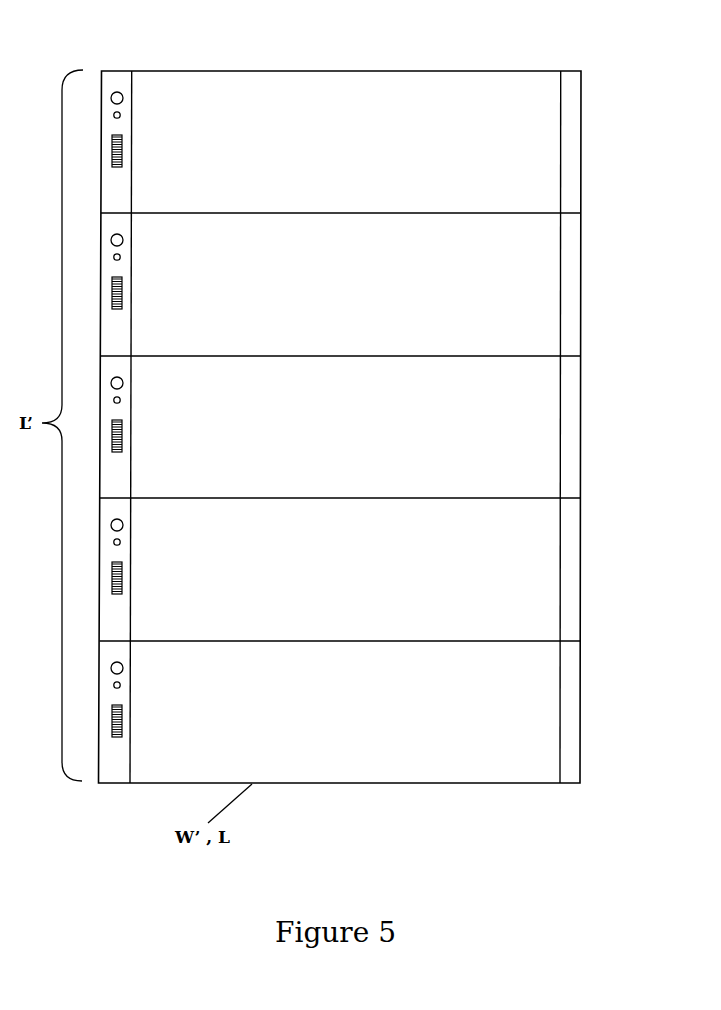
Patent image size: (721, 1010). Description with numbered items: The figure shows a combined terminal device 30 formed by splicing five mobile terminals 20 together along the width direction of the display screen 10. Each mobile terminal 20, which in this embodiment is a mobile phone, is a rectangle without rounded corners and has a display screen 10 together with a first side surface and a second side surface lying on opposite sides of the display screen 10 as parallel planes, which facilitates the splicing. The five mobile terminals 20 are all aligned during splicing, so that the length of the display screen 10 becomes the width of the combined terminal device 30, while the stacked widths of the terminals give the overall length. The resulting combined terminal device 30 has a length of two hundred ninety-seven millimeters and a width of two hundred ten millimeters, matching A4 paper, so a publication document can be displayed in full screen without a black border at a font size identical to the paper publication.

The display screen 10 is at (498, 71).
The mobile terminal 20 is at (581, 103).
The combined terminal device 30 is at (119, 57).